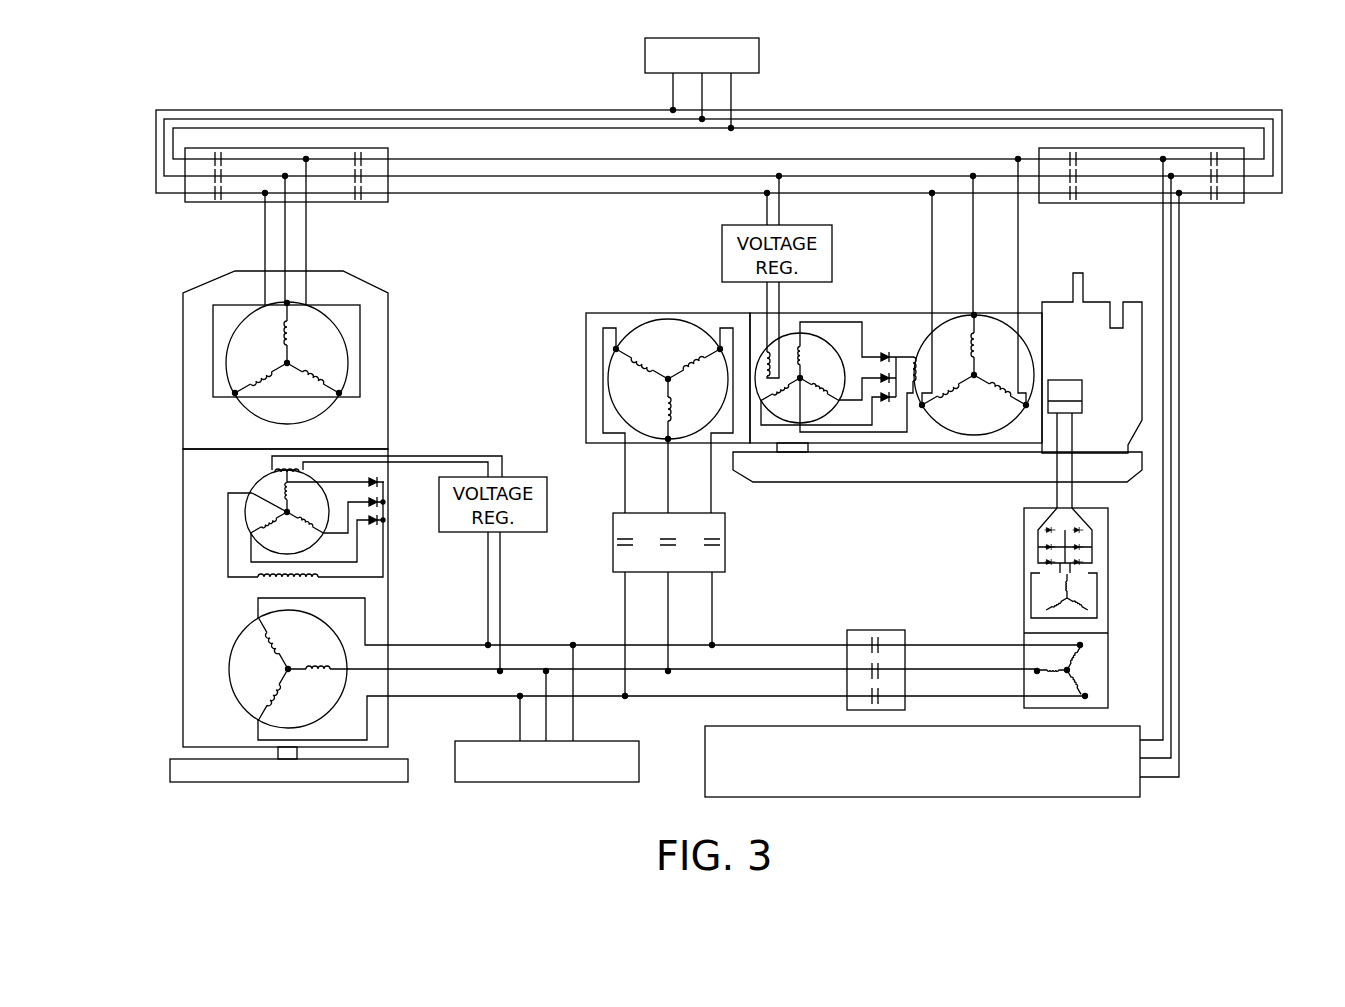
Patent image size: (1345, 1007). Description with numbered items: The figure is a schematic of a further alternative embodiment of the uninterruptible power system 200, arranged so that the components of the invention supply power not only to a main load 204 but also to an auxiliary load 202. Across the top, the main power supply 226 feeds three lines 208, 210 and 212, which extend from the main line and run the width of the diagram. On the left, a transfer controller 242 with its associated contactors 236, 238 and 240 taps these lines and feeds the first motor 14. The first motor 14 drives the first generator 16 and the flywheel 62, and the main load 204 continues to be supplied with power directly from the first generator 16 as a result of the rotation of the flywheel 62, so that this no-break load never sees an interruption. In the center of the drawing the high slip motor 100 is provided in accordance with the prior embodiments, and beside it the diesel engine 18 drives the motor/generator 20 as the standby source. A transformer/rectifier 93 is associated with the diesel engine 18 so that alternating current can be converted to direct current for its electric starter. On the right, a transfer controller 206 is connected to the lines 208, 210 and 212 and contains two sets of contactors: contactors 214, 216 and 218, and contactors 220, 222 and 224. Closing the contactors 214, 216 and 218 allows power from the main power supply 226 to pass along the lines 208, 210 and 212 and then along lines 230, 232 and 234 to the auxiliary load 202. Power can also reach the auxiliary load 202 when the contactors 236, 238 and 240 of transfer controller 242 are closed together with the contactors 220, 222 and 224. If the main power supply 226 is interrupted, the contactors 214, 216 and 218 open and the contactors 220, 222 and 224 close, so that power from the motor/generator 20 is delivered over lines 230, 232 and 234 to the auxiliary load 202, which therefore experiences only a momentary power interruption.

The system 200 is at (719, 118).
The main power supply 226 is at (759, 55).
The line 208 is at (1075, 110).
The line 210 is at (1118, 120).
The line 212 is at (1160, 129).
The transfer controller 206 is at (1156, 188).
The contactor 214 is at (1218, 157).
The contactor 216 is at (1218, 179).
The contactor 218 is at (1217, 196).
The contactor 220 is at (1077, 161).
The contactor 222 is at (1069, 178).
The contactor 224 is at (1075, 196).
The transfer controller 242 is at (303, 191).
The contactor 236 is at (362, 157).
The contactor 238 is at (364, 180).
The contactor 240 is at (362, 197).
The first motor 14 is at (388, 363).
The first generator 16 is at (183, 572).
The flywheel 62 is at (392, 783).
The high slip motor 100 is at (586, 331).
The motor/generator 20 is at (865, 313).
The diesel engine 18 is at (1093, 298).
The transformer/rectifier 93 is at (1108, 578).
The line 230 is at (1163, 562).
The line 232 is at (1172, 537).
The line 234 is at (1180, 500).
The main load 204 is at (590, 783).
The auxiliary load 202 is at (893, 798).